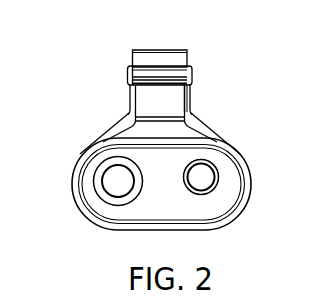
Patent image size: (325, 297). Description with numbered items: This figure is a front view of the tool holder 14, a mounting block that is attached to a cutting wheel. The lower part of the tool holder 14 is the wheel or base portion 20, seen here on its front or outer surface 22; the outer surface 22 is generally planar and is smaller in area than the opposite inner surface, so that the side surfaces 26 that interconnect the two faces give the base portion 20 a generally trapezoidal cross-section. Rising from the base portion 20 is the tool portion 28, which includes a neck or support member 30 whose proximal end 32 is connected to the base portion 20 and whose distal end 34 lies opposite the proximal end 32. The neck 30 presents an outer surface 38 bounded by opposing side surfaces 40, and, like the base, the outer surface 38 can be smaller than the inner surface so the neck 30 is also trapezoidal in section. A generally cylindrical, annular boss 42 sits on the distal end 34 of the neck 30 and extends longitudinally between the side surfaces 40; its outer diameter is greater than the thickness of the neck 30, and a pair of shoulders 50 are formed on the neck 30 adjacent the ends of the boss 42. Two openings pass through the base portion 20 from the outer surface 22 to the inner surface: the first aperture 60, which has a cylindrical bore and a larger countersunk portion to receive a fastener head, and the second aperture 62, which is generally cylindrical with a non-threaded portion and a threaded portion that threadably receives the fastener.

The tool holder 14 is at (81, 203).
The base portion 20 is at (237, 143).
The outer surface 22 is at (157, 204).
The side surfaces 26 is at (238, 182).
The tool portion 28 is at (190, 100).
The neck 30 is at (141, 102).
The proximal end 32 is at (128, 125).
The distal end 34 is at (130, 75).
The outer surface 38 is at (180, 92).
The side surfaces 40 is at (129, 90).
The boss 42 is at (158, 54).
The shoulders 50 is at (127, 71).
The first aperture 60 is at (116, 181).
The second aperture 62 is at (201, 180).